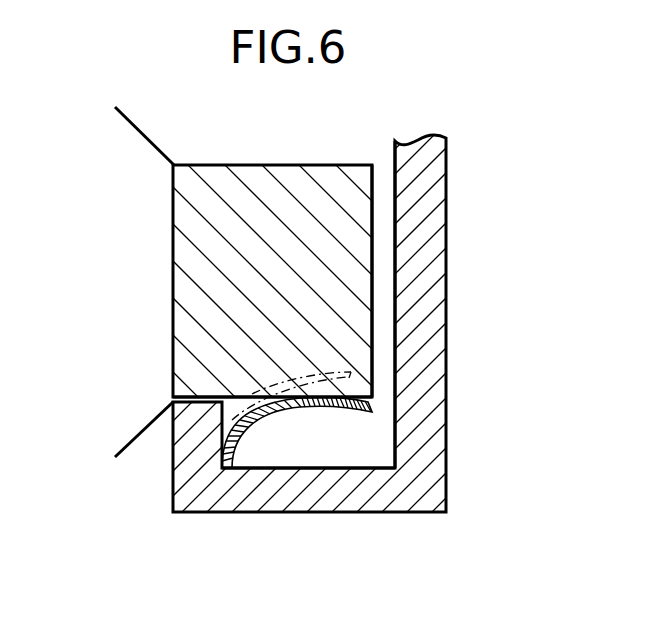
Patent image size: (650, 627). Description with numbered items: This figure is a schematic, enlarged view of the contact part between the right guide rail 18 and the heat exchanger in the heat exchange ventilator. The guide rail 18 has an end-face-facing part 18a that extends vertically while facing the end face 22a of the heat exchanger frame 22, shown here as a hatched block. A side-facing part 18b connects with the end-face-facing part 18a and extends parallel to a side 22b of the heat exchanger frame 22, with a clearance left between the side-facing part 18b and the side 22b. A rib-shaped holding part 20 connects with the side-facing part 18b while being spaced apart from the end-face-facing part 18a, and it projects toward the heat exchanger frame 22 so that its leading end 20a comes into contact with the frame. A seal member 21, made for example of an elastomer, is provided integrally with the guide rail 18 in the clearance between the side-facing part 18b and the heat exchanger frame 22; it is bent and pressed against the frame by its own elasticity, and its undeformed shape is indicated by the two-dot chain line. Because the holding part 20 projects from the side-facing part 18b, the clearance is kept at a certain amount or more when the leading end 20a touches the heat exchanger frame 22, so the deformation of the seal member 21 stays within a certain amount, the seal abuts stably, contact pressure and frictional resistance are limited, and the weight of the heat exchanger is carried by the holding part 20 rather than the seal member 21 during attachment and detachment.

The guide rail 18 is at (387, 493).
The end-face-facing part 18a is at (423, 320).
The side-facing part 18b is at (322, 493).
The holding part 20 is at (173, 448).
The leading end 20a is at (188, 393).
The seal member 21 is at (322, 407).
The heat exchanger frame 22 is at (263, 225).
The end face 22a is at (373, 270).
The side 22b is at (190, 415).